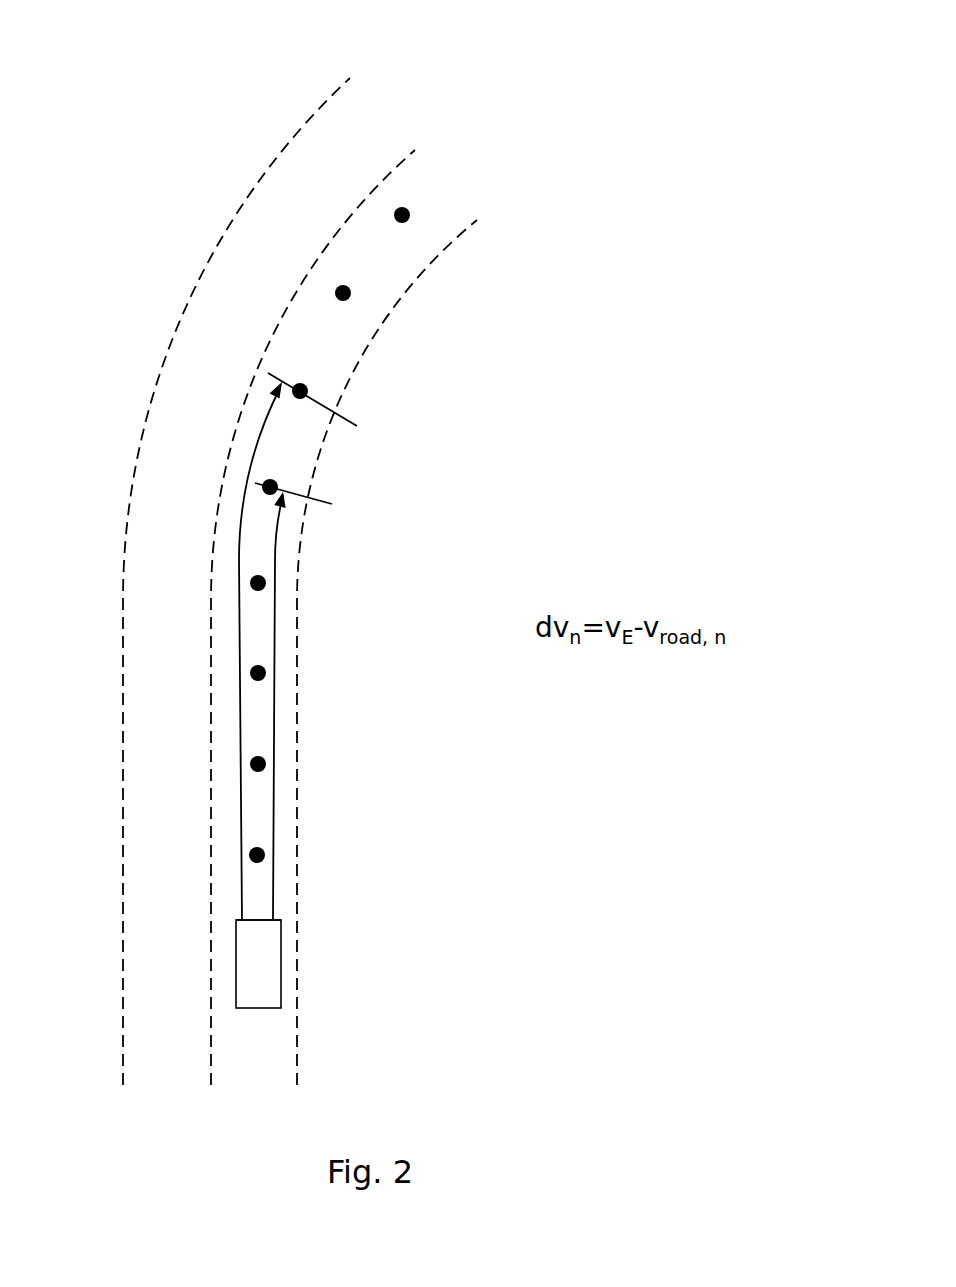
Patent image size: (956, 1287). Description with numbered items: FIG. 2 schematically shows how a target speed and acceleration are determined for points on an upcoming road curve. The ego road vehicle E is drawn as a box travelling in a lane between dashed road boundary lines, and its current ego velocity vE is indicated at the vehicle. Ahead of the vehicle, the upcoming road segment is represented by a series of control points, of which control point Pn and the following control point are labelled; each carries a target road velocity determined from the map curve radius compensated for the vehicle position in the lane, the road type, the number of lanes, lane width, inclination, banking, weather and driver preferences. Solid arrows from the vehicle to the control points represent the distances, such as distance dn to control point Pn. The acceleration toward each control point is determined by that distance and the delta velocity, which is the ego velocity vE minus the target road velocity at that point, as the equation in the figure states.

The ego road vehicle E is at (258, 964).
The ego velocity vE is at (281, 920).
The distance to control point n dn is at (273, 643).
The control point n Pn is at (282, 468).